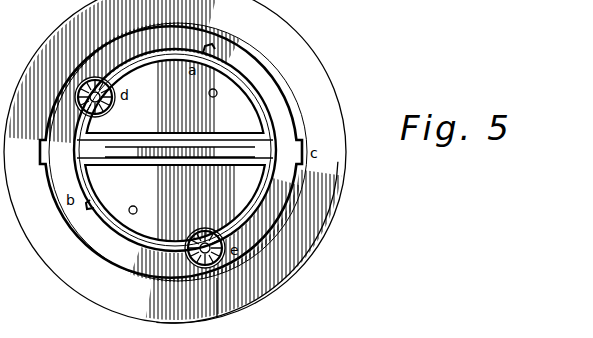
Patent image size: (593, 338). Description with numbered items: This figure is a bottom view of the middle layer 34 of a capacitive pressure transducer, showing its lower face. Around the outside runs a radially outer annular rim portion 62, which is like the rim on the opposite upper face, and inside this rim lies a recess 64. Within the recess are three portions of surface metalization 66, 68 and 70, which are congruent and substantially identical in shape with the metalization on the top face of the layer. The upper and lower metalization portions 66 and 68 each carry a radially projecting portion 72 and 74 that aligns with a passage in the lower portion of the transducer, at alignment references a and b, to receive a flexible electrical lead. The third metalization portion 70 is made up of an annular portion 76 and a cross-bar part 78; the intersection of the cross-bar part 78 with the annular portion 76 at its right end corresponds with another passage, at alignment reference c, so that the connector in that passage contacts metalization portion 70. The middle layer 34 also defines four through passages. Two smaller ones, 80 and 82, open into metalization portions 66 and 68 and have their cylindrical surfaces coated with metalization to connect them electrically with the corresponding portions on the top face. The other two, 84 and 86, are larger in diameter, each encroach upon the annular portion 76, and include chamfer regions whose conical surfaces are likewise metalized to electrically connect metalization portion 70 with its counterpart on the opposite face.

The middle layer 34 is at (307, 45).
The radially outer annular rim portion 62 is at (337, 167).
The recess 64 is at (274, 218).
The surface metalization portion 66 is at (153, 126).
The surface metalization portion 68 is at (208, 200).
The surface metalization portion 70 is at (252, 262).
The radially projecting portion 72 is at (212, 47).
The radially projecting portion 74 is at (80, 204).
The annular portion 76 is at (142, 260).
The cross-bar part 78 is at (236, 155).
The through passage 80 is at (210, 91).
The through passage 82 is at (153, 183).
The through passage 84 is at (84, 80).
The through passage 86 is at (205, 271).